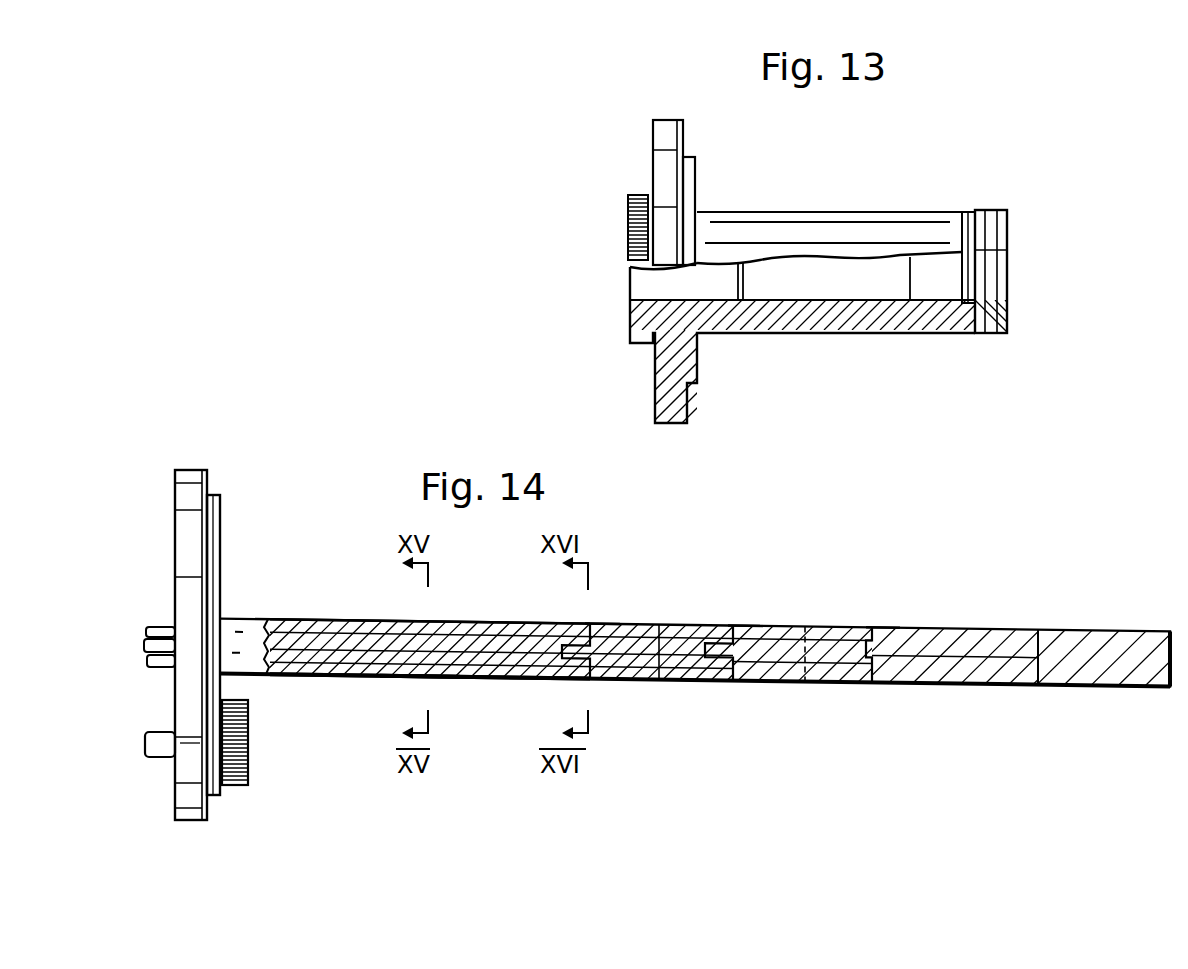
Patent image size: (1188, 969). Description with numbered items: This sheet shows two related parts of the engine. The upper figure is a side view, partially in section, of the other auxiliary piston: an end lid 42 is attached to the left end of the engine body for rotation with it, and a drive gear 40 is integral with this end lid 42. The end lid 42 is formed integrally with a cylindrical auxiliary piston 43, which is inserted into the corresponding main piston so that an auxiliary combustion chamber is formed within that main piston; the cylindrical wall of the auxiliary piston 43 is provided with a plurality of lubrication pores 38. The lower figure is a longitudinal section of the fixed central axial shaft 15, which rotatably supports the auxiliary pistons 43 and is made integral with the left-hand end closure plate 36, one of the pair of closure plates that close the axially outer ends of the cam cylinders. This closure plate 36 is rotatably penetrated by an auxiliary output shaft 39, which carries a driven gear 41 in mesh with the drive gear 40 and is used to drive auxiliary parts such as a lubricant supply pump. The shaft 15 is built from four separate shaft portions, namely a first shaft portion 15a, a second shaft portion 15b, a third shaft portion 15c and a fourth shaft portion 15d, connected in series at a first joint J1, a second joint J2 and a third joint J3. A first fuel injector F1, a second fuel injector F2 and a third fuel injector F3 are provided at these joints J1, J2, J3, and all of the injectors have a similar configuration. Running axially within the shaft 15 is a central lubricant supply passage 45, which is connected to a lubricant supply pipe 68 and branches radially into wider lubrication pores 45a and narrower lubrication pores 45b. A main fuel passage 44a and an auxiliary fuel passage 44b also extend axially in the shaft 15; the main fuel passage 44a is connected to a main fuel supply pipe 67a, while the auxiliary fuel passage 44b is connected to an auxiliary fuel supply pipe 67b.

In FIG. 13, the lubrication pores 38 is at (837, 302).
In FIG. 13, the drive gear 40 is at (628, 218).
In FIG. 13, the end lid 42 is at (683, 124).
In FIG. 13, the auxiliary piston 43 is at (858, 225).
In FIG. 14, the central axial shaft 15 is at (1010, 633).
In FIG. 14, the first shaft portion 15a is at (350, 620).
In FIG. 14, the second shaft portion 15b is at (682, 625).
In FIG. 14, the third shaft portion 15c is at (836, 632).
In FIG. 14, the fourth shaft portion 15d is at (936, 630).
In FIG. 14, the closure plate 36 is at (193, 478).
In FIG. 14, the auxiliary output shaft 39 is at (150, 752).
In FIG. 14, the driven gear 41 is at (230, 782).
In FIG. 14, the main fuel passage 44a is at (466, 680).
In FIG. 14, the auxiliary fuel passage 44b is at (485, 623).
In FIG. 14, the central lubricant supply passage 45 is at (303, 640).
In FIG. 14, the wider lubrication pores 45a is at (415, 677).
In FIG. 14, the narrower lubrication pores 45b is at (665, 623).
In FIG. 14, the main fuel supply pipe 67a is at (148, 661).
In FIG. 14, the auxiliary fuel supply pipe 67b is at (148, 628).
In FIG. 14, the lubricant supply pipe 68 is at (148, 643).
In FIG. 14, the first joint J1 is at (598, 681).
In FIG. 14, the second joint J2 is at (725, 683).
In FIG. 14, the third joint J3 is at (870, 689).
In FIG. 14, the first fuel injector F1 is at (600, 626).
In FIG. 14, the second fuel injector F2 is at (735, 625).
In FIG. 14, the third fuel injector F3 is at (878, 630).